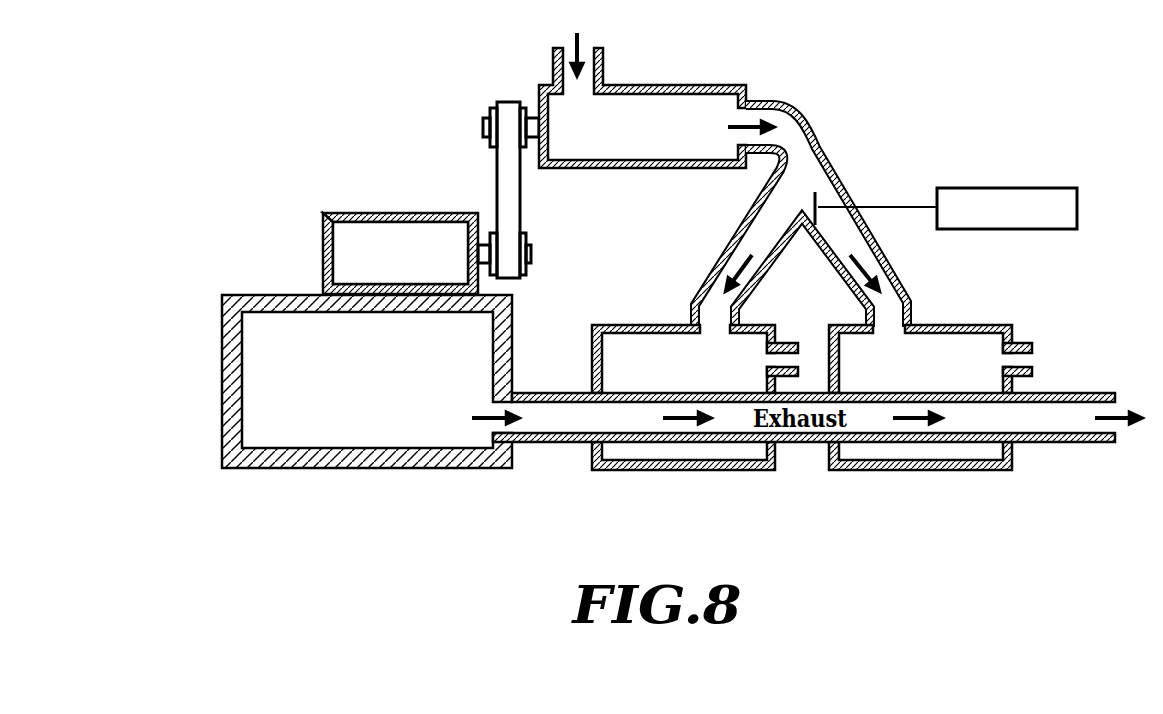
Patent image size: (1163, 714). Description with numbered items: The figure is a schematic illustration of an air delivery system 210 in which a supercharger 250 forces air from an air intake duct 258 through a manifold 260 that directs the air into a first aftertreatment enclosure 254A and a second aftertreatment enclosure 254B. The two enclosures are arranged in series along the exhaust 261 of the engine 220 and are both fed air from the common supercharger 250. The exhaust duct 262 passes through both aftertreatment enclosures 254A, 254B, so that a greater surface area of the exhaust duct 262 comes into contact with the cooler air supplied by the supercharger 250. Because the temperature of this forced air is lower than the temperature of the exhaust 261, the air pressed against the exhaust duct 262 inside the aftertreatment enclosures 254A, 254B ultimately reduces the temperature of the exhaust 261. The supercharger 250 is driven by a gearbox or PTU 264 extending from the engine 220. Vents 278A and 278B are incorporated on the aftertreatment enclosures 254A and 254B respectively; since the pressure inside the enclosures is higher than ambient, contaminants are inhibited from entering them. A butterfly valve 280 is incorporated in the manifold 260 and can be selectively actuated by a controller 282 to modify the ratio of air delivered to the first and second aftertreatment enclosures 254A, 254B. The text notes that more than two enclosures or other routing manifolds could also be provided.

The air delivery system 210 is at (1044, 86).
The engine 220 is at (293, 333).
The supercharger 250 is at (675, 110).
The first aftertreatment enclosure 254A is at (622, 330).
The second aftertreatment enclosure 254B is at (993, 342).
The air intake duct 258 is at (552, 68).
The manifold 260 is at (817, 133).
The exhaust 261 is at (535, 421).
The exhaust duct 262 is at (530, 395).
The gearbox or PTU 264 is at (353, 235).
The vent 278A is at (787, 342).
The vent 278B is at (1038, 359).
The butterfly valve 280 is at (822, 207).
The controller 282 is at (1024, 188).